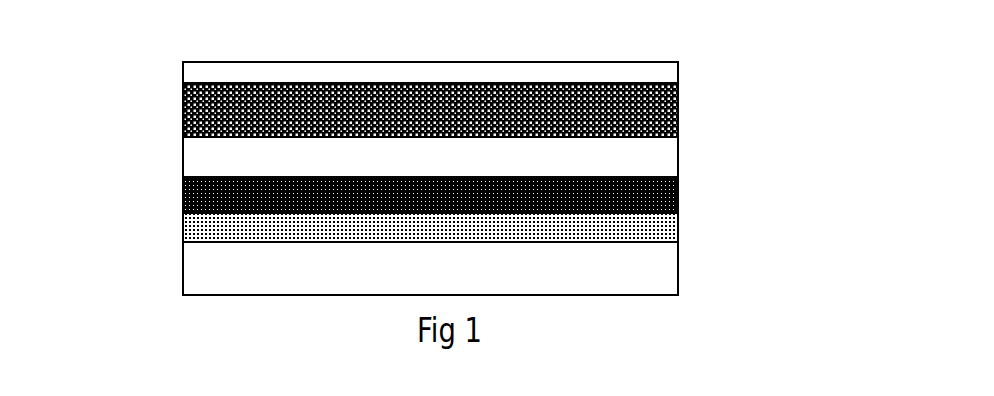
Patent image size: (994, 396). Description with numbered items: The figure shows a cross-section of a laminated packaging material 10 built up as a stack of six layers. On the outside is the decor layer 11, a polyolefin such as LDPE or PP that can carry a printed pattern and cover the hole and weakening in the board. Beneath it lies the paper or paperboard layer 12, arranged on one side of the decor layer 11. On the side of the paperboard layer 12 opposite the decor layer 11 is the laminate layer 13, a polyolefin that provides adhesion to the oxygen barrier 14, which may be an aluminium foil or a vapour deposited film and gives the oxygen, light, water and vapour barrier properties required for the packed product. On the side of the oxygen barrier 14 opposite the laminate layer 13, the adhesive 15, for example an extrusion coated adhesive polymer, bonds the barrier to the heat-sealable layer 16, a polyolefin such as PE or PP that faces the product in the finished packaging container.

The multilayer composite / laminate 10 is at (345, 178).
The decor layer 11 is at (678, 70).
The paperboard layer 12 is at (678, 117).
The laminate layer 13 is at (678, 155).
The oxygen barrier 14 is at (678, 197).
The adhesive 15 is at (678, 232).
The heat-sealable layer 16 is at (678, 278).